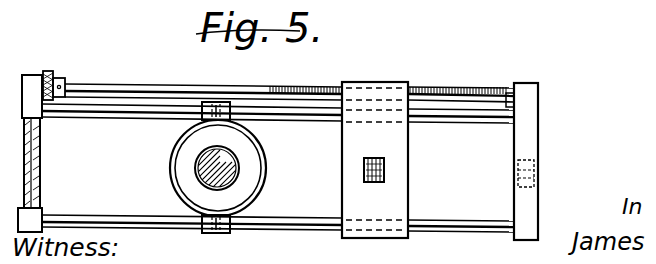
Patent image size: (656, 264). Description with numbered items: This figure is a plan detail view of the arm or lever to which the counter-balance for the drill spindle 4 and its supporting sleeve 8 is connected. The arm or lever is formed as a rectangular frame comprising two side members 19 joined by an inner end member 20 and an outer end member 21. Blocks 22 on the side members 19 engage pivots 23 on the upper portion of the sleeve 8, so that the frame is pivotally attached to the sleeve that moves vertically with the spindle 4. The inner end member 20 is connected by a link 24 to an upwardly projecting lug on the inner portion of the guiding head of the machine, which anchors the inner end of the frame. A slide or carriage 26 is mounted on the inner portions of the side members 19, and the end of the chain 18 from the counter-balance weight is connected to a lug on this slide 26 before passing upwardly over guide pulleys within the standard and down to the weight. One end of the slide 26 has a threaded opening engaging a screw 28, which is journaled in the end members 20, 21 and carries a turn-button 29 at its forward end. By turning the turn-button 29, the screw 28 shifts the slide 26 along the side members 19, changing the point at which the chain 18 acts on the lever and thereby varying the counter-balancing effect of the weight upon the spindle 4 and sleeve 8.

The drill spindle 4 is at (194, 175).
The supporting sleeve 8 is at (264, 157).
The chain 18 is at (386, 182).
The side members 19 is at (146, 110).
The inner end member 20 is at (538, 137).
The outer end member 21 is at (43, 152).
The blocks 22 is at (211, 102).
The pivots 23 is at (220, 104).
The link 24 is at (538, 177).
The slide or carriage 26 is at (390, 139).
The screw 28 is at (133, 84).
The turn-button 29 is at (59, 68).